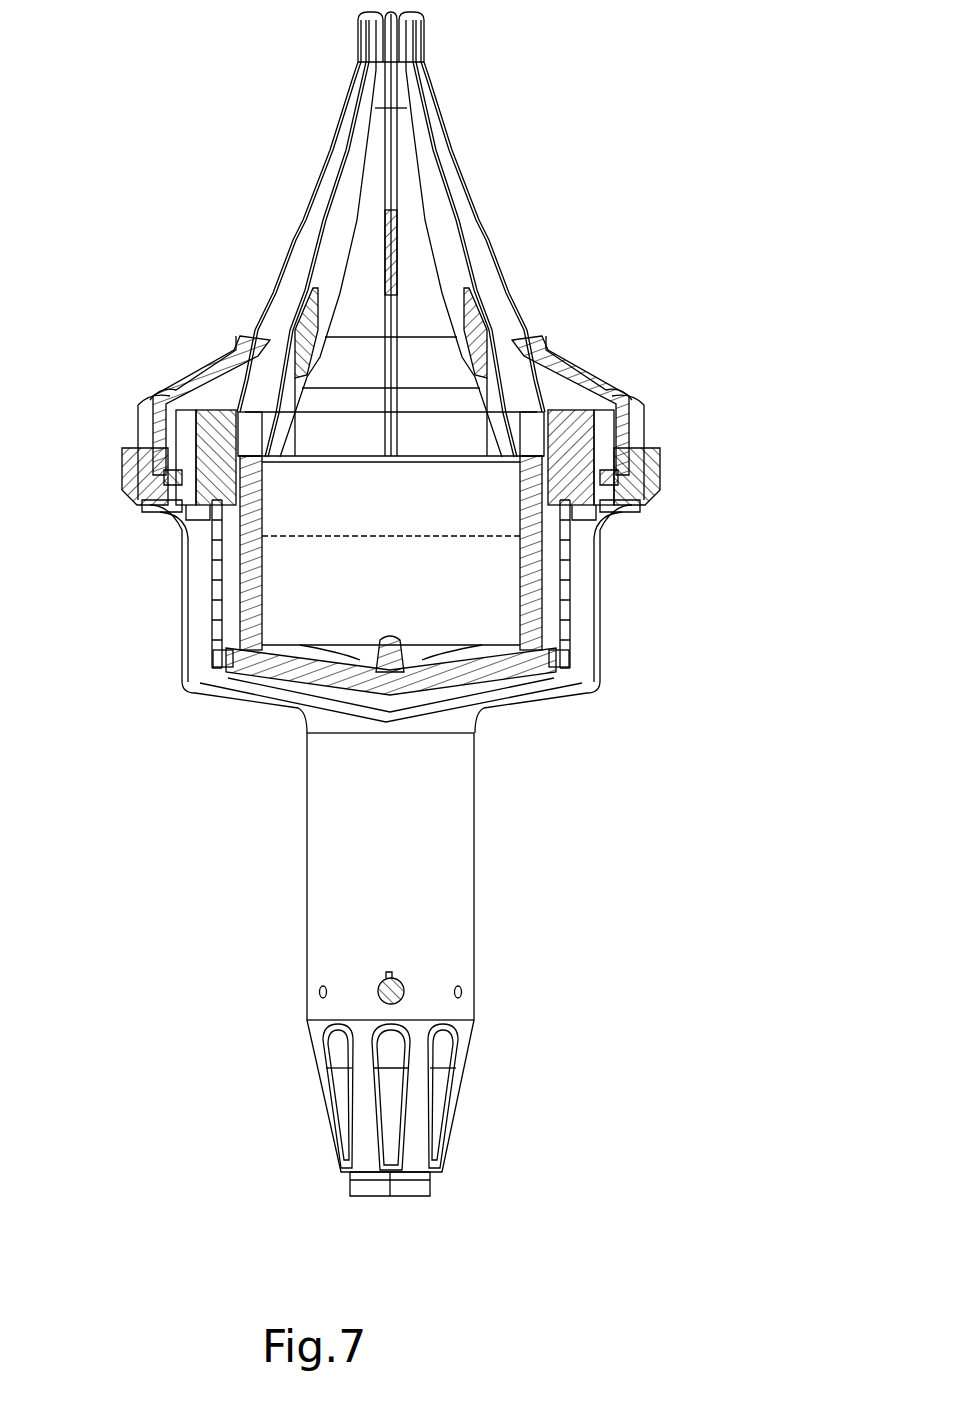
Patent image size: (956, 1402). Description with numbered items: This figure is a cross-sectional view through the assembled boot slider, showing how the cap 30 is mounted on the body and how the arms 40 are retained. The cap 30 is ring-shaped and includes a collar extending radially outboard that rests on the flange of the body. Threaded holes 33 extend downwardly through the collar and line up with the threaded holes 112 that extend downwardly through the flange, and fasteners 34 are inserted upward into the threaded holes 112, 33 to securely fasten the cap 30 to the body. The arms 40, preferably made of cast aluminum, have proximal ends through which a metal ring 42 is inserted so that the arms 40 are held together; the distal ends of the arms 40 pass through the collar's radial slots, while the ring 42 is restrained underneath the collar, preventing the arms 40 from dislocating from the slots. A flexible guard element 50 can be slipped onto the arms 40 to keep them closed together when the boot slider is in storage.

The cap 30 is at (566, 430).
The threaded holes 33 is at (652, 449).
The fasteners 34 is at (640, 478).
The arms 40 is at (300, 248).
The ring 42 is at (620, 528).
The flexible guard element 50 is at (222, 362).
The threaded holes 112 is at (640, 506).